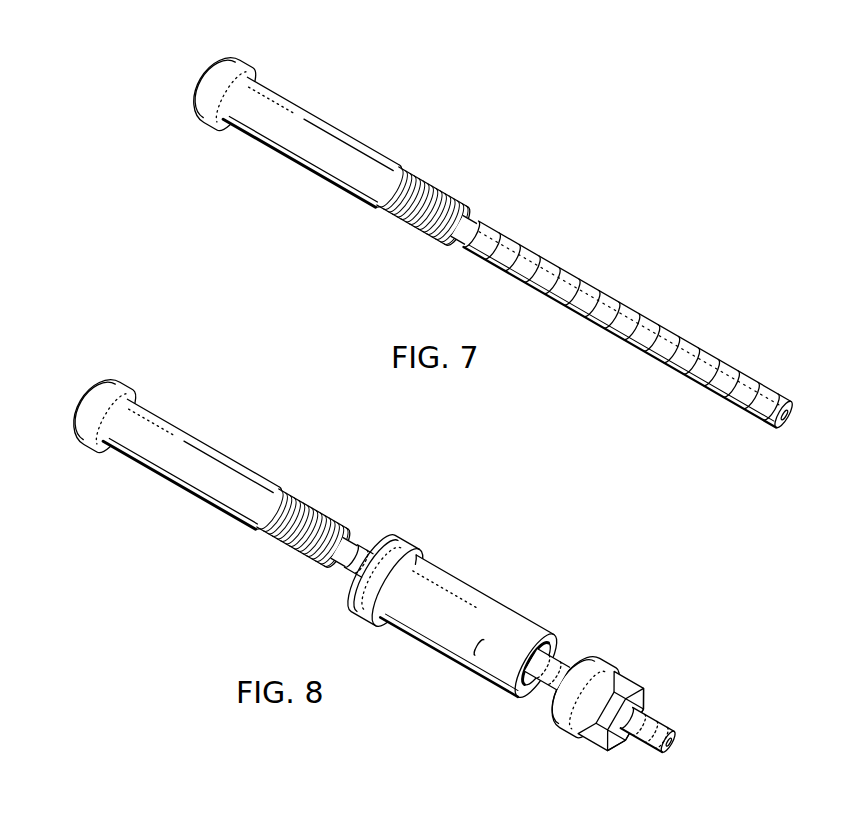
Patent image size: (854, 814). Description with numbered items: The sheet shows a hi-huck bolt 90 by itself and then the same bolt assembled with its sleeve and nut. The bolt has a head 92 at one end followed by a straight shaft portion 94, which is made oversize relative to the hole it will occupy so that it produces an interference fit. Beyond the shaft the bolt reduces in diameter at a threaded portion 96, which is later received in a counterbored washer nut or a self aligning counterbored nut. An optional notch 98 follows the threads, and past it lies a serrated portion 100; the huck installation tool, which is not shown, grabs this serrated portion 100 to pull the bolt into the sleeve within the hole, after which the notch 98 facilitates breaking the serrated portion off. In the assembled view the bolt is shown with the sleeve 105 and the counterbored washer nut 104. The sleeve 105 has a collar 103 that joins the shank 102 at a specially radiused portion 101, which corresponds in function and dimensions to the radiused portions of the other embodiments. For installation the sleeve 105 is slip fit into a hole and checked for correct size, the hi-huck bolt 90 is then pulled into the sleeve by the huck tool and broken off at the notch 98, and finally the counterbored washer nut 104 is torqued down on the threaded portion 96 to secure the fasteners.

In FIG. 7, the hi-huck bolt 90 is at (351, 135).
In FIG. 7, the head 92 is at (227, 60).
In FIG. 8, the head 92 is at (105, 374).
In FIG. 7, the straight shaft portion 94 is at (304, 171).
In FIG. 8, the straight shaft portion 94 is at (187, 499).
In FIG. 7, the threaded portion 96 is at (433, 241).
In FIG. 8, the threaded portion 96 is at (300, 558).
In FIG. 7, the notch 98 is at (472, 216).
In FIG. 7, the serrated portion 100 is at (608, 296).
In FIG. 8, the serrated portion 100 is at (362, 548).
In FIG. 8, the radiused portion 101 is at (422, 558).
In FIG. 8, the shank 102 is at (480, 648).
In FIG. 8, the collar 103 is at (363, 620).
In FIG. 8, the counterbored washer nut 104 is at (620, 672).
In FIG. 8, the sleeve 105 is at (488, 600).